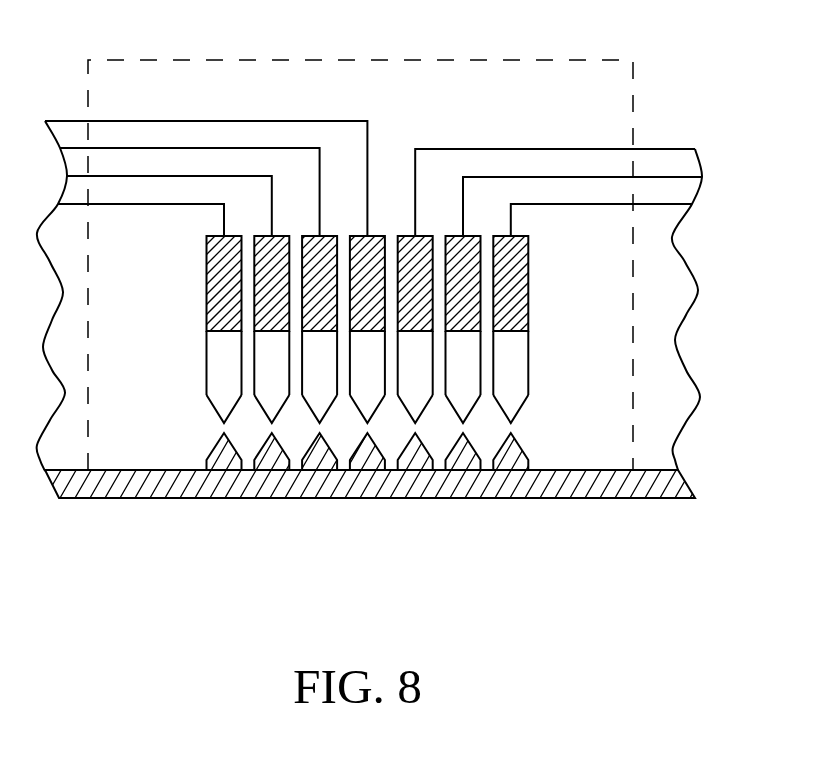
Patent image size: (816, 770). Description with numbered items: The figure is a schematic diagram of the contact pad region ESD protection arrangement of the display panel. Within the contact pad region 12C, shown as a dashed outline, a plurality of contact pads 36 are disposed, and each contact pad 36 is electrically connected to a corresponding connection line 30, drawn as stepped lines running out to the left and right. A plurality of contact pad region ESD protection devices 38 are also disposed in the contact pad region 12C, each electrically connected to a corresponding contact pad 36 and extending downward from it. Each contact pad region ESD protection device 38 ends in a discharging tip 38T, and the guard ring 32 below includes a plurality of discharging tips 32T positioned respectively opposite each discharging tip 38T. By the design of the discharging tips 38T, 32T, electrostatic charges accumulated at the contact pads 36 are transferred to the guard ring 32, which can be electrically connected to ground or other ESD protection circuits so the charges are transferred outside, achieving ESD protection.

The contact pad region 12C is at (378, 60).
The connection line 30 is at (495, 148).
The contact pad 36 is at (521, 273).
The contact pad region ESD protection device 38 is at (515, 355).
The discharging tip 38T is at (523, 404).
The discharging tip 32T is at (516, 436).
The guard ring 32 is at (476, 498).